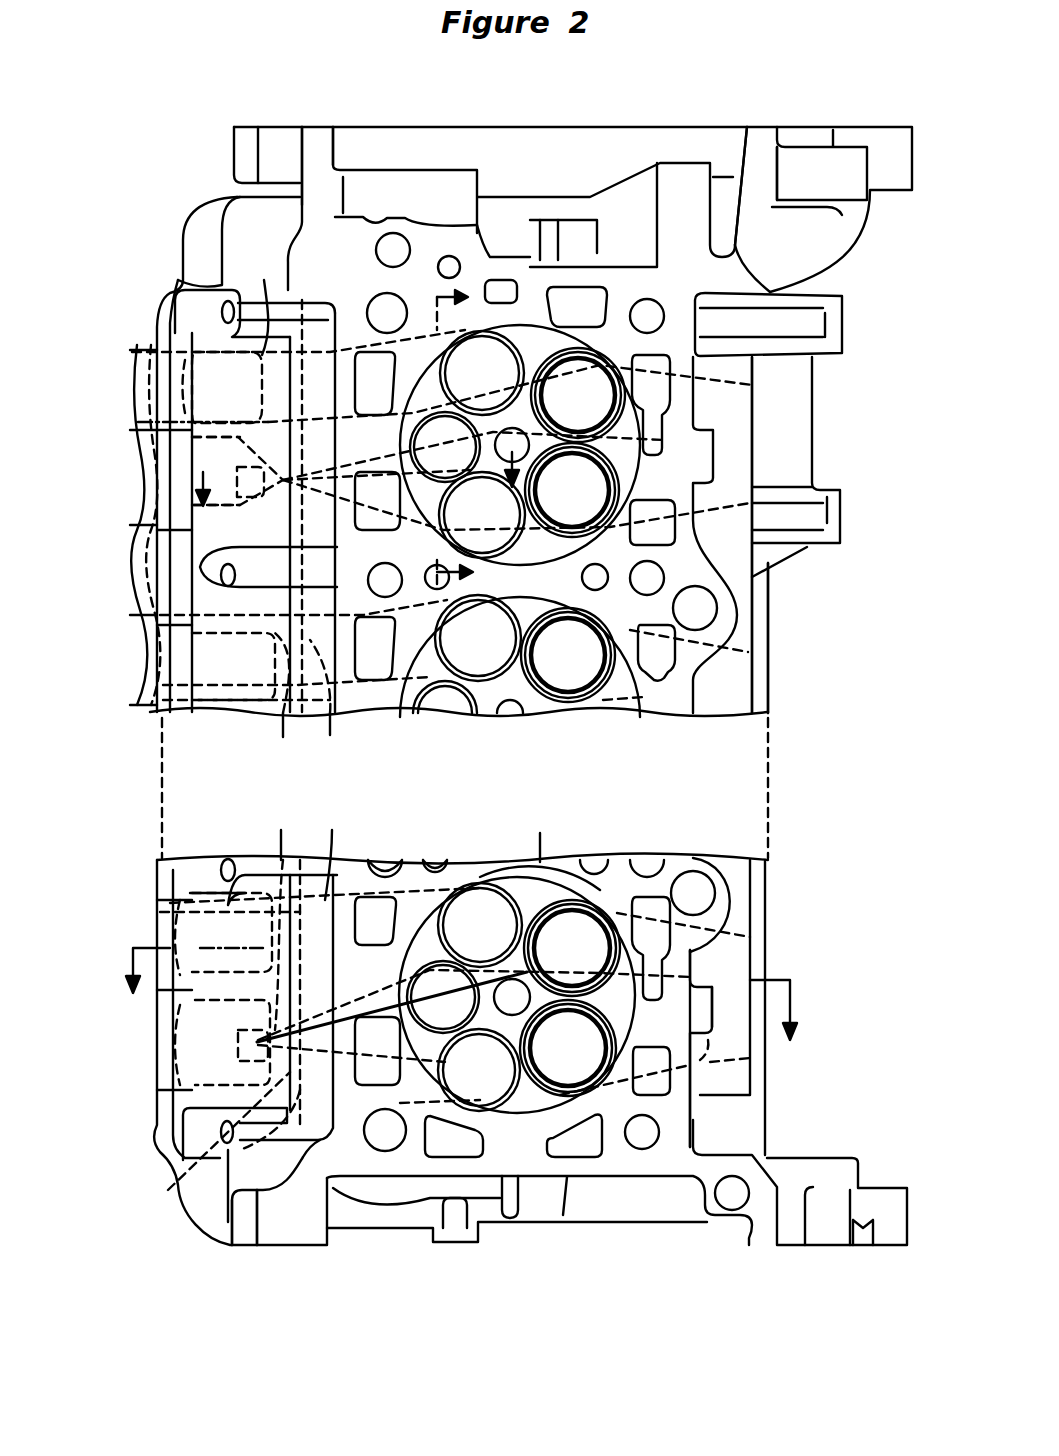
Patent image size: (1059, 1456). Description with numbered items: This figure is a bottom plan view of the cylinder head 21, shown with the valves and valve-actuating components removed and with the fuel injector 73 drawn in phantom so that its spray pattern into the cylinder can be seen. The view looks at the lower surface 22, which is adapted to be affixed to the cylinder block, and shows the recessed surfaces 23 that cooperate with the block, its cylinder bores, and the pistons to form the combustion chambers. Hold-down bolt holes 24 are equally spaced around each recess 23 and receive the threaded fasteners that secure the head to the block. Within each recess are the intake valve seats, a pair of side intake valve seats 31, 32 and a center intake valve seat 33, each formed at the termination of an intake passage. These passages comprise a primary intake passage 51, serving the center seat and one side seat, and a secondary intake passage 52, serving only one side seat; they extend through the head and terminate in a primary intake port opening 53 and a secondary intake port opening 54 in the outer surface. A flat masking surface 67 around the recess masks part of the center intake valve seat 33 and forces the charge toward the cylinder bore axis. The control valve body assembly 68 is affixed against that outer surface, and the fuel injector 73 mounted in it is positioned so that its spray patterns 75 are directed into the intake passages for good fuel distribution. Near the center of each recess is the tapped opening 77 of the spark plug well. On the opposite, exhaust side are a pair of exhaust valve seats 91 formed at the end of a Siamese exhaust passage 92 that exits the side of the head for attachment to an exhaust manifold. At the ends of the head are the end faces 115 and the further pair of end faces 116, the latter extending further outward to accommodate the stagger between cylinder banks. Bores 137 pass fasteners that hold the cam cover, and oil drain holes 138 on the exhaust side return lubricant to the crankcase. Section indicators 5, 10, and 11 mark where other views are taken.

The section line 5- 5 is at (463, 994).
The section line 10- 10 is at (358, 497).
The section line 11- 11 is at (464, 440).
The cylinder head 21 is at (768, 690).
The lower surface 22 is at (670, 470).
The recessed surfaces 23 is at (540, 340).
The hold-down bolt holes 24 is at (384, 304).
The side intake valve seat 31 is at (480, 890).
The side intake valve seat 32 is at (503, 1150).
The center intake valve seat 33 is at (480, 962).
The primary intake passage 51 is at (209, 1137).
The secondary intake passage 52 is at (160, 912).
The primary intake port opening 53 is at (240, 525).
The secondary intake port opening 54 is at (162, 350).
The flat masking surface 67 is at (378, 968).
The control valve body assembly 68 is at (324, 885).
The fuel injector 73 is at (240, 520).
The spray patterns 75 is at (400, 422).
The tapped opening 77 is at (488, 405).
The exhaust valve seats 91 is at (555, 418).
The Siamese exhaust passage 92 is at (692, 1037).
The end faces 115 is at (298, 1245).
The end faces 116 is at (312, 155).
The bores 137 is at (606, 585).
The oil drain holes 138 is at (705, 618).